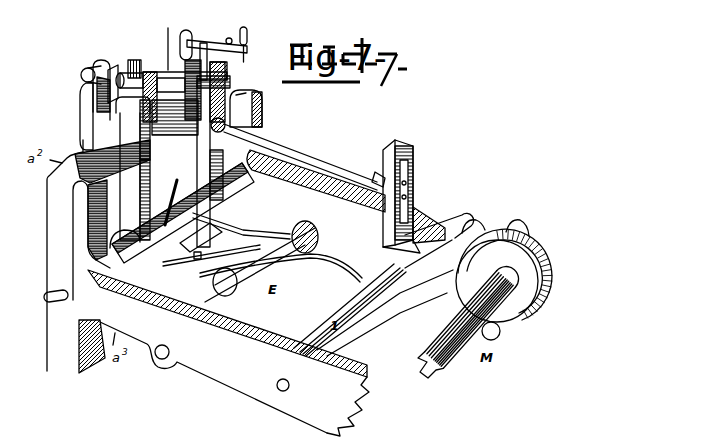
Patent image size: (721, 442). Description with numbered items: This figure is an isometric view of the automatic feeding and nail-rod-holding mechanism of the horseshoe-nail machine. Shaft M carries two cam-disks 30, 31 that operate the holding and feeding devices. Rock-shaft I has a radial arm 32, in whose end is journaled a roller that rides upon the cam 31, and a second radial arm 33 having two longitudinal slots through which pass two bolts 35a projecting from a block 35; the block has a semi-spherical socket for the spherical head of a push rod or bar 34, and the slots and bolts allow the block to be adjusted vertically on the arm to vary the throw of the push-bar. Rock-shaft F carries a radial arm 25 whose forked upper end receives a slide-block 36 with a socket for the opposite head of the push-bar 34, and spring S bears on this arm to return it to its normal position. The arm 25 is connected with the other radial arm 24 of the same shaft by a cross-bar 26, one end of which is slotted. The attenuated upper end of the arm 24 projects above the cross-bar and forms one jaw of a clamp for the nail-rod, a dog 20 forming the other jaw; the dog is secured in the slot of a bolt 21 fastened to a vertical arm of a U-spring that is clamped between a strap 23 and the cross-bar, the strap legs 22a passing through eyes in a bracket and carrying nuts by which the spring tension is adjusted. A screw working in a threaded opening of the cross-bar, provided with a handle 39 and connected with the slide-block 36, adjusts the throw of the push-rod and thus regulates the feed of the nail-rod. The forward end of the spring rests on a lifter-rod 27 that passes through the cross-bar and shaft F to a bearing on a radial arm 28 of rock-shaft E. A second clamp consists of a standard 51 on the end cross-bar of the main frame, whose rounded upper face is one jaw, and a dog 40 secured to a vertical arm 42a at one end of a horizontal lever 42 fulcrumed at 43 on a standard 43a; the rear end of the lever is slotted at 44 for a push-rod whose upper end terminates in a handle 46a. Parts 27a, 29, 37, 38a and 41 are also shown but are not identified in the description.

The dog 20 is at (139, 57).
The bolt 21 is at (119, 72).
The strap legs 22a is at (183, 206).
The strap 23 is at (178, 130).
The radial arm 24 is at (130, 180).
The radial arm 25 is at (116, 110).
The cross-bar 26 is at (230, 80).
The lifter-rod 27 is at (177, 182).
The support post 27a is at (227, 92).
The radial arm 28 is at (211, 254).
The link 29 is at (328, 270).
The cam-disk 30 is at (485, 300).
The cam-disk 31 is at (540, 252).
The radial arm 32 is at (439, 240).
The radial arm 33 is at (401, 189).
The push rod 34 is at (308, 156).
The block 35 is at (377, 171).
The bolts 35a is at (413, 188).
The slide-block 36 is at (262, 108).
The bracket top 37 is at (240, 92).
The pin 38a is at (207, 63).
The handle 39 is at (254, 43).
The dog 40 is at (97, 60).
The knob 41 is at (82, 72).
The horizontal lever 42 is at (189, 32).
The vertical arm 42a is at (113, 64).
The fulcrum 43 is at (162, 72).
The standard 43a is at (168, 30).
The slot 44 is at (206, 44).
The handle 46a is at (230, 37).
The standard 51 is at (86, 98).